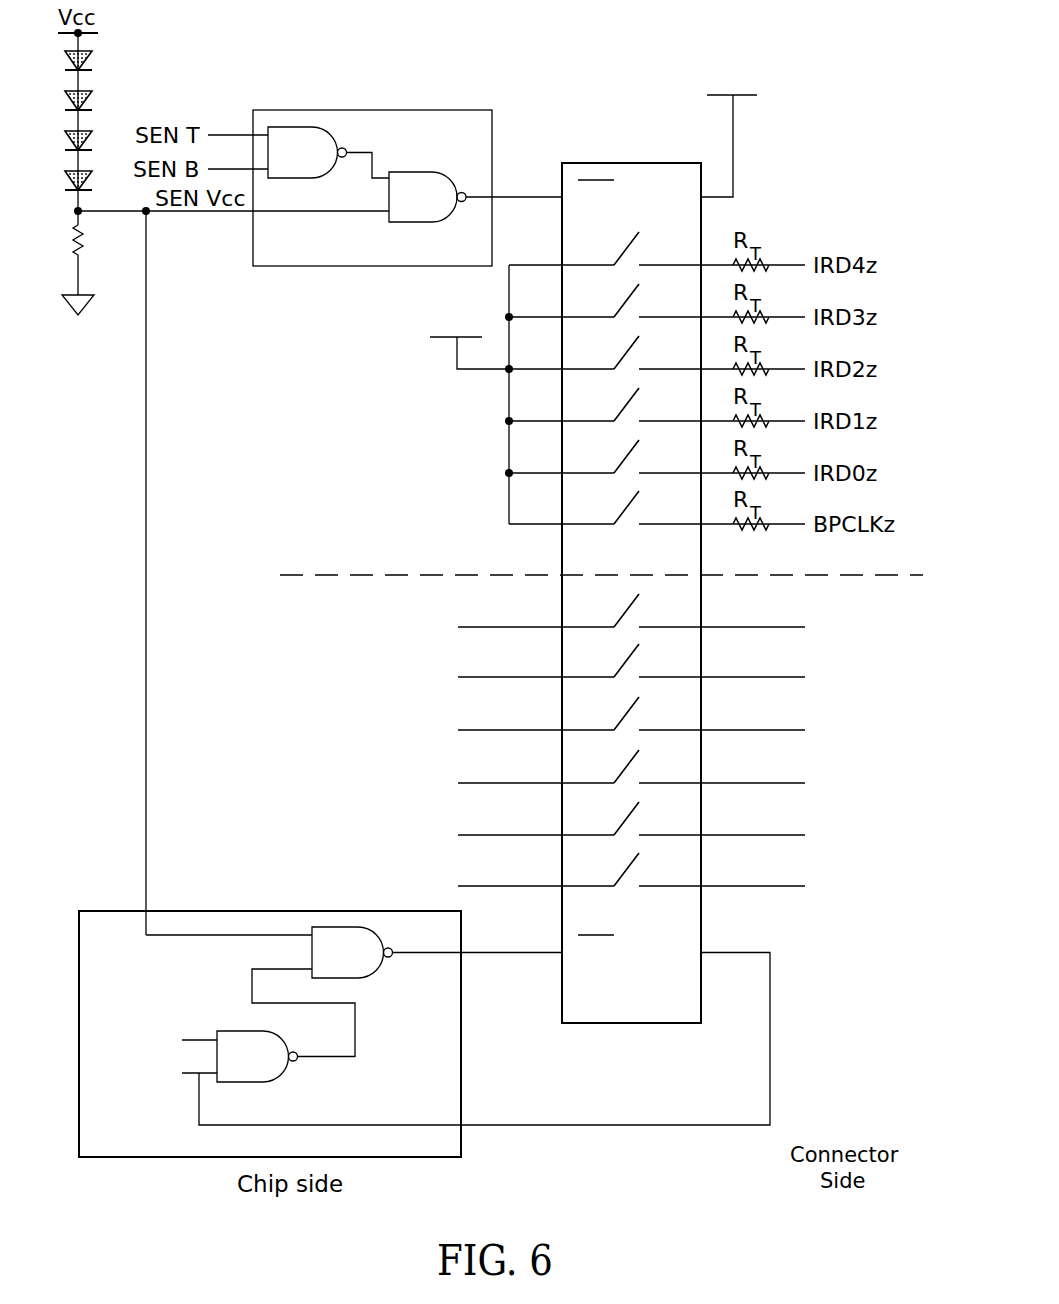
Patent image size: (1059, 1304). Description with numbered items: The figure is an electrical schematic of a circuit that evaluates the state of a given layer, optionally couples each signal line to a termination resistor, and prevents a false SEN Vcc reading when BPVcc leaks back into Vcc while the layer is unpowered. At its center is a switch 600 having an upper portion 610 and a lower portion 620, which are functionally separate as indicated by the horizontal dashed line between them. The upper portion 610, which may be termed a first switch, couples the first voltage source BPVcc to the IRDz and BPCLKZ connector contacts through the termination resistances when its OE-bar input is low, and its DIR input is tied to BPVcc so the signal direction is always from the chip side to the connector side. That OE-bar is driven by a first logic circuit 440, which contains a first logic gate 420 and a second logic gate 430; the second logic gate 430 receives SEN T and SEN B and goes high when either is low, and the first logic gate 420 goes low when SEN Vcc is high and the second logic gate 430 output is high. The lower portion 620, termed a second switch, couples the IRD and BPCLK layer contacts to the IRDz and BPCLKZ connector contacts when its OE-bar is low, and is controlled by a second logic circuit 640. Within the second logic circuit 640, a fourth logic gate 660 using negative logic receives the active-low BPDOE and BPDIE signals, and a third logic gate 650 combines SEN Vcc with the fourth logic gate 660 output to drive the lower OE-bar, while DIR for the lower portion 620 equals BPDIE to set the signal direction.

The first logic gate 420 is at (428, 215).
The second logic gate 430 is at (283, 127).
The first logic circuit 440 is at (442, 138).
The switch 600 is at (623, 142).
The upper portion 610 is at (485, 408).
The lower portion 620 is at (561, 708).
The second logic circuit 640 is at (120, 920).
The third logic gate 650 is at (363, 968).
The fourth logic gate 660 is at (257, 1078).